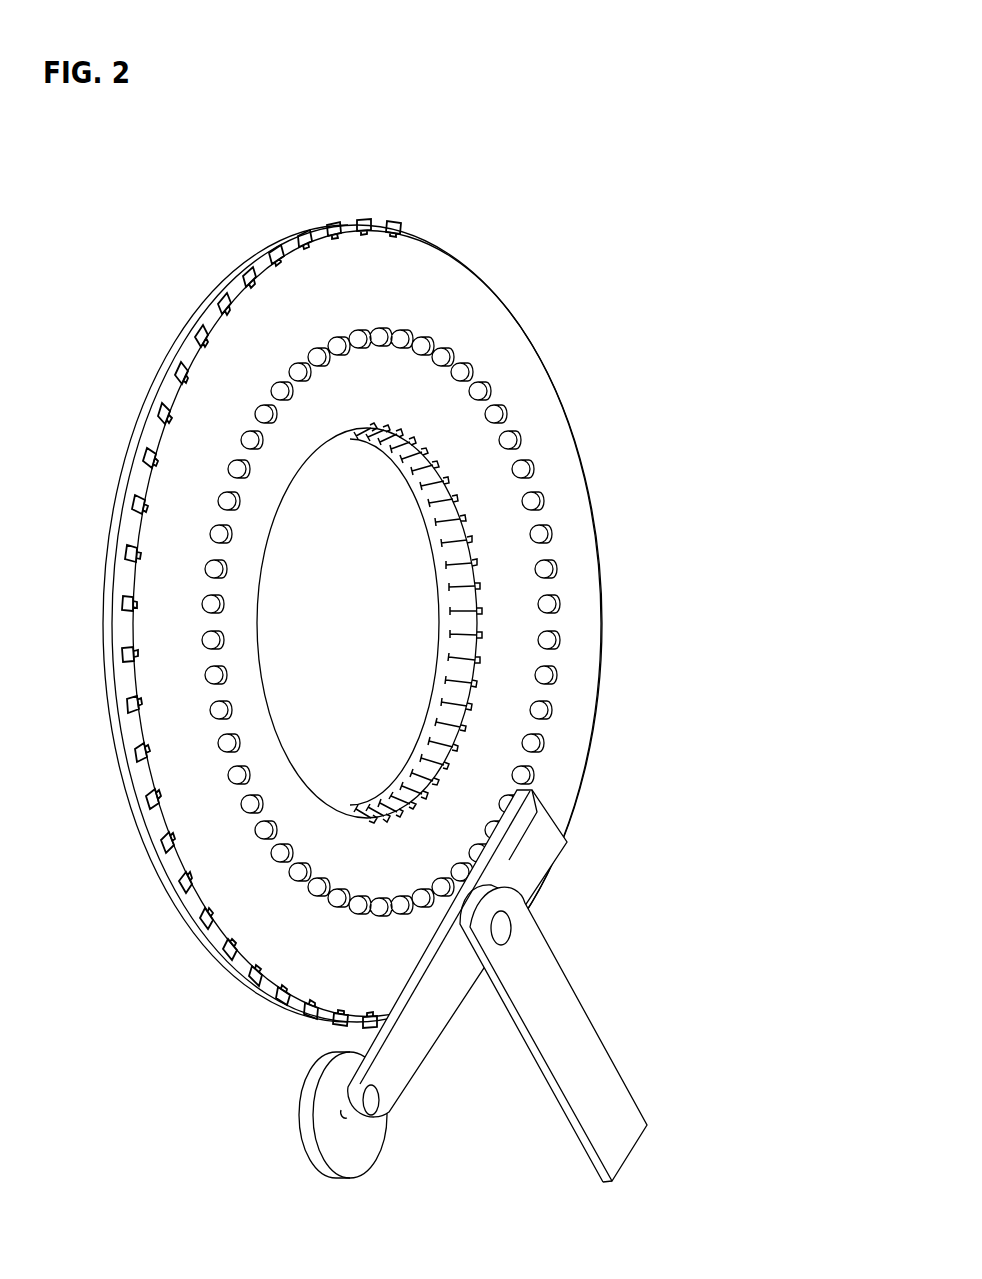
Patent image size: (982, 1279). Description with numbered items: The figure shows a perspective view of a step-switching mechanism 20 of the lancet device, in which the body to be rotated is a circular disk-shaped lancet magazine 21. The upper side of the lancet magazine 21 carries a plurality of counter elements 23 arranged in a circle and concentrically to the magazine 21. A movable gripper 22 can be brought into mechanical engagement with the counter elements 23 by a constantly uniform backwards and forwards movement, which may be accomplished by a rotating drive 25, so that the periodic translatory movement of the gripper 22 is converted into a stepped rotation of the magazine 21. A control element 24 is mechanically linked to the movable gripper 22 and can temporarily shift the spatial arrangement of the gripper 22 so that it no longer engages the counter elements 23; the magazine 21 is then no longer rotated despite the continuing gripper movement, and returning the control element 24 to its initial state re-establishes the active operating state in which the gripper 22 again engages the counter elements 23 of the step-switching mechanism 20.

The step-switching mechanism 20 is at (514, 121).
The lancet magazine 21 is at (218, 387).
The movable gripper 22 is at (398, 1058).
The counter elements 23 is at (565, 720).
The control element 24 is at (578, 1045).
The rotating drive 25 is at (333, 1147).